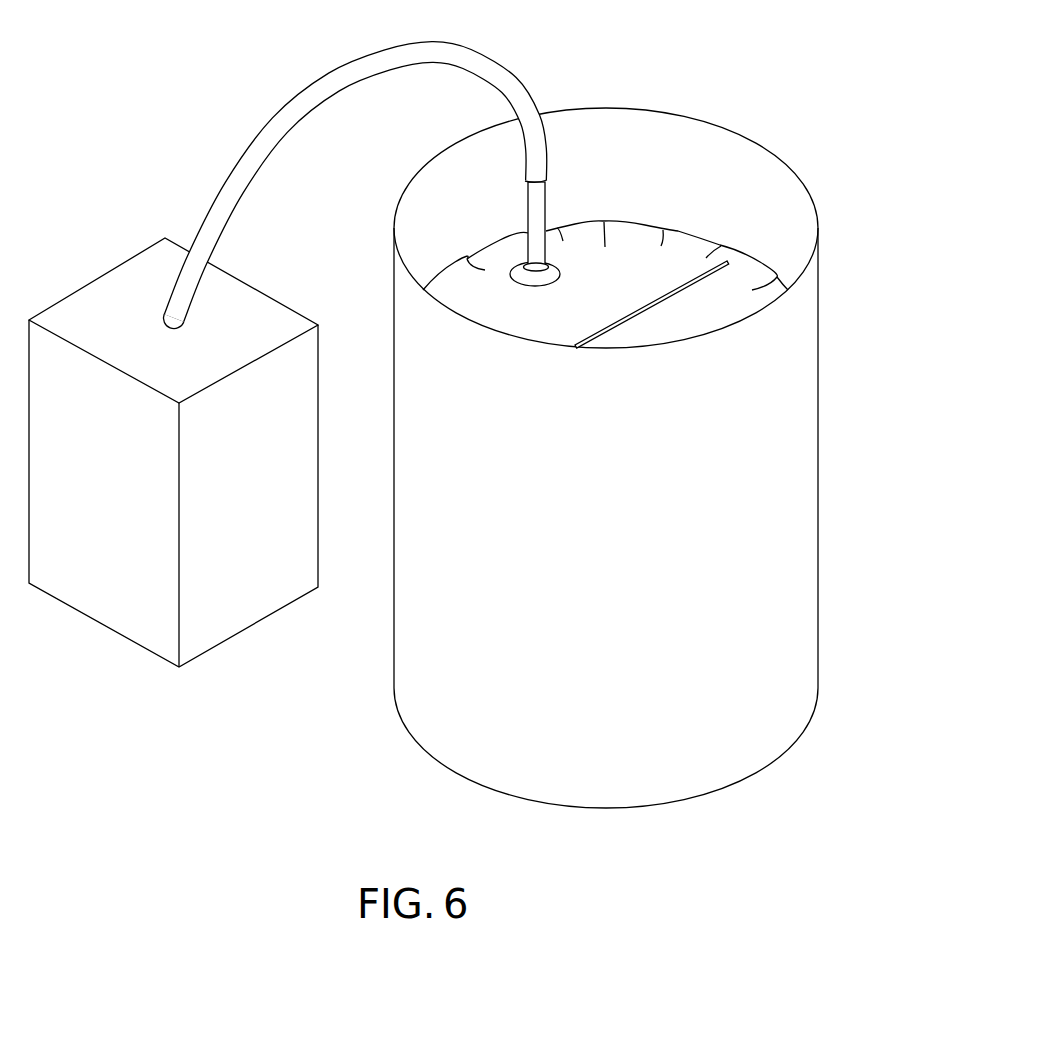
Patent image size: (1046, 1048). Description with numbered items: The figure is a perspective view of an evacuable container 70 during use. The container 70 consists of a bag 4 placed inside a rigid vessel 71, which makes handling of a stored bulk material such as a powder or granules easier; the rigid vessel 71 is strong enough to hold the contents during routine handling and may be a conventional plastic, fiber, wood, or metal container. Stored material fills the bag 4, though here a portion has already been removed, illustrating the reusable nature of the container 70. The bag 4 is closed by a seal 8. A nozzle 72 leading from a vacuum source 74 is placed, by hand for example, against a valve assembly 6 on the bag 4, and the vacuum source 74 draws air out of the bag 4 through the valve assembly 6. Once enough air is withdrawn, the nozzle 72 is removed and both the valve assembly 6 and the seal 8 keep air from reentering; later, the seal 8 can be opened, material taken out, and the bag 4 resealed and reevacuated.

The container 70 is at (859, 347).
The rigid vessel 71 is at (763, 490).
The nozzle 72 is at (540, 198).
The vacuum source 74 is at (117, 575).
The bag 4 is at (640, 253).
The valve assembly 6 is at (560, 268).
The seal 8 is at (688, 280).